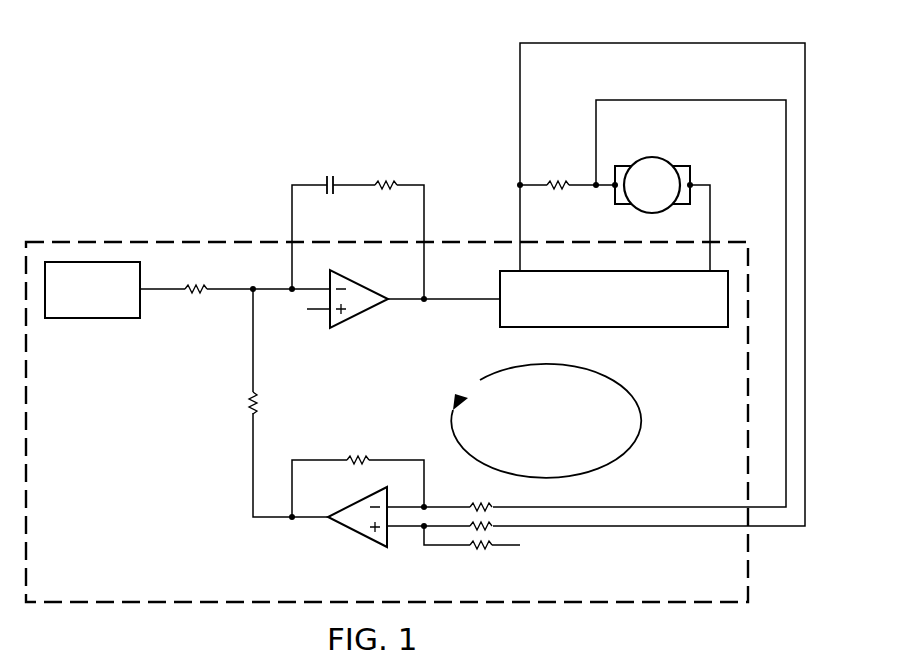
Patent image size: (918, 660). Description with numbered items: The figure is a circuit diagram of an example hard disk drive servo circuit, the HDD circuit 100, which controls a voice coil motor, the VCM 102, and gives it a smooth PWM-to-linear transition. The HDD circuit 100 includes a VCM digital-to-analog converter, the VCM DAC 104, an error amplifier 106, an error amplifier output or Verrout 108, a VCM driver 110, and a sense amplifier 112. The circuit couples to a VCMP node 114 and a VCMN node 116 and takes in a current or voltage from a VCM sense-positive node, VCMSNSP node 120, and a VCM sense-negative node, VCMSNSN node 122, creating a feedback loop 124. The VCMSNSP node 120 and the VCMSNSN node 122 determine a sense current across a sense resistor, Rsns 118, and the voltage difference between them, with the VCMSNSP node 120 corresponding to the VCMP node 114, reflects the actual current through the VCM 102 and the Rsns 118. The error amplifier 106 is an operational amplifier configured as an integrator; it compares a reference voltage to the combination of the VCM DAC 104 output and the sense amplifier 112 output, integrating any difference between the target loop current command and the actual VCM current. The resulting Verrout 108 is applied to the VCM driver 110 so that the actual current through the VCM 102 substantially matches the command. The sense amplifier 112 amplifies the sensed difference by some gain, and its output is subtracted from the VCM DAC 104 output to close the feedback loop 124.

The HDD circuit 100 is at (214, 242).
The VCM 102 is at (655, 157).
The VCM digital-to-analog converter (DAC) 104 is at (92, 320).
The error amplifier 106 is at (360, 315).
The error amplifier output (Verrout) 108 is at (462, 303).
The VCM driver 110 is at (614, 328).
The sense amplifier 112 is at (360, 535).
The VCMP node 114 is at (519, 184).
The VCMN node 116 is at (712, 212).
The sense resistor (Rsns) 118 is at (560, 175).
The VCM sense-positive (VCMSNSP) node 120 is at (738, 99).
The VCM sense-negative (VCMSNSN) node 122 is at (740, 42).
The feedback loop 124 is at (633, 428).